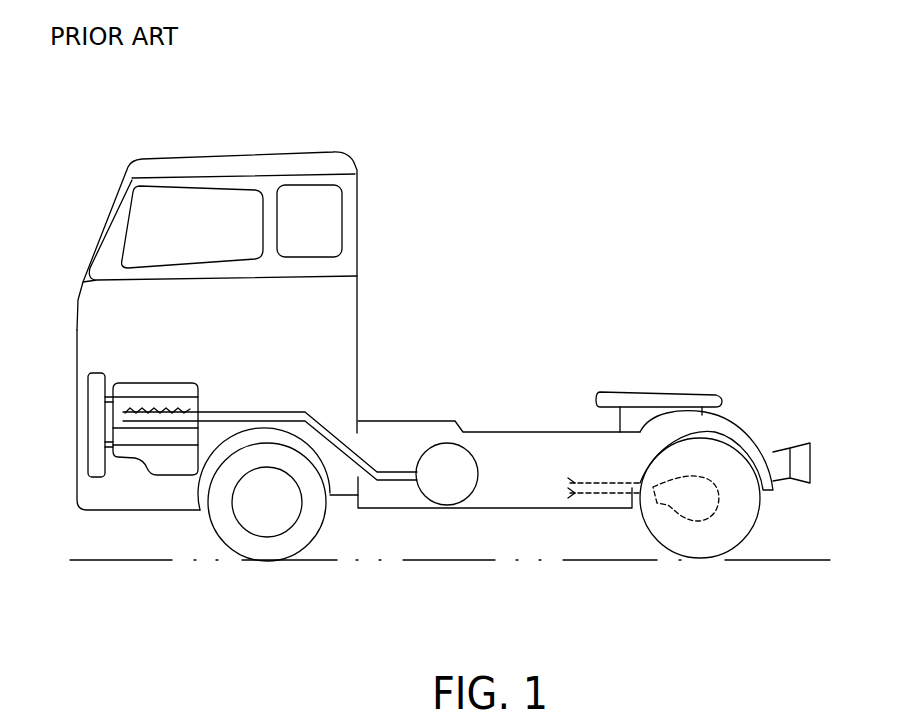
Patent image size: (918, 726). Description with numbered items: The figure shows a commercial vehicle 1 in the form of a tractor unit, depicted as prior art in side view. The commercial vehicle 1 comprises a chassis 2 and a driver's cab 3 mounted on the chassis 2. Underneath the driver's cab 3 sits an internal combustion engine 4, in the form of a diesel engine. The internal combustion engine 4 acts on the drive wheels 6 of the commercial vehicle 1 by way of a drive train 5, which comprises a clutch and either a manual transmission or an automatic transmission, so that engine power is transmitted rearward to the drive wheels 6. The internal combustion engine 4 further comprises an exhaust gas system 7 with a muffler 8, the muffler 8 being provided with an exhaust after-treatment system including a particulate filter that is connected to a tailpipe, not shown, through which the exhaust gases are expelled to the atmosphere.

The commercial vehicle 1 is at (578, 153).
The chassis 2 is at (517, 432).
The driver's cab 3 is at (240, 163).
The internal combustion engine 4 is at (170, 460).
The drive train 5 is at (595, 495).
The drive wheels 6 is at (730, 530).
The exhaust gas system 7 is at (343, 487).
The muffler 8 is at (448, 492).